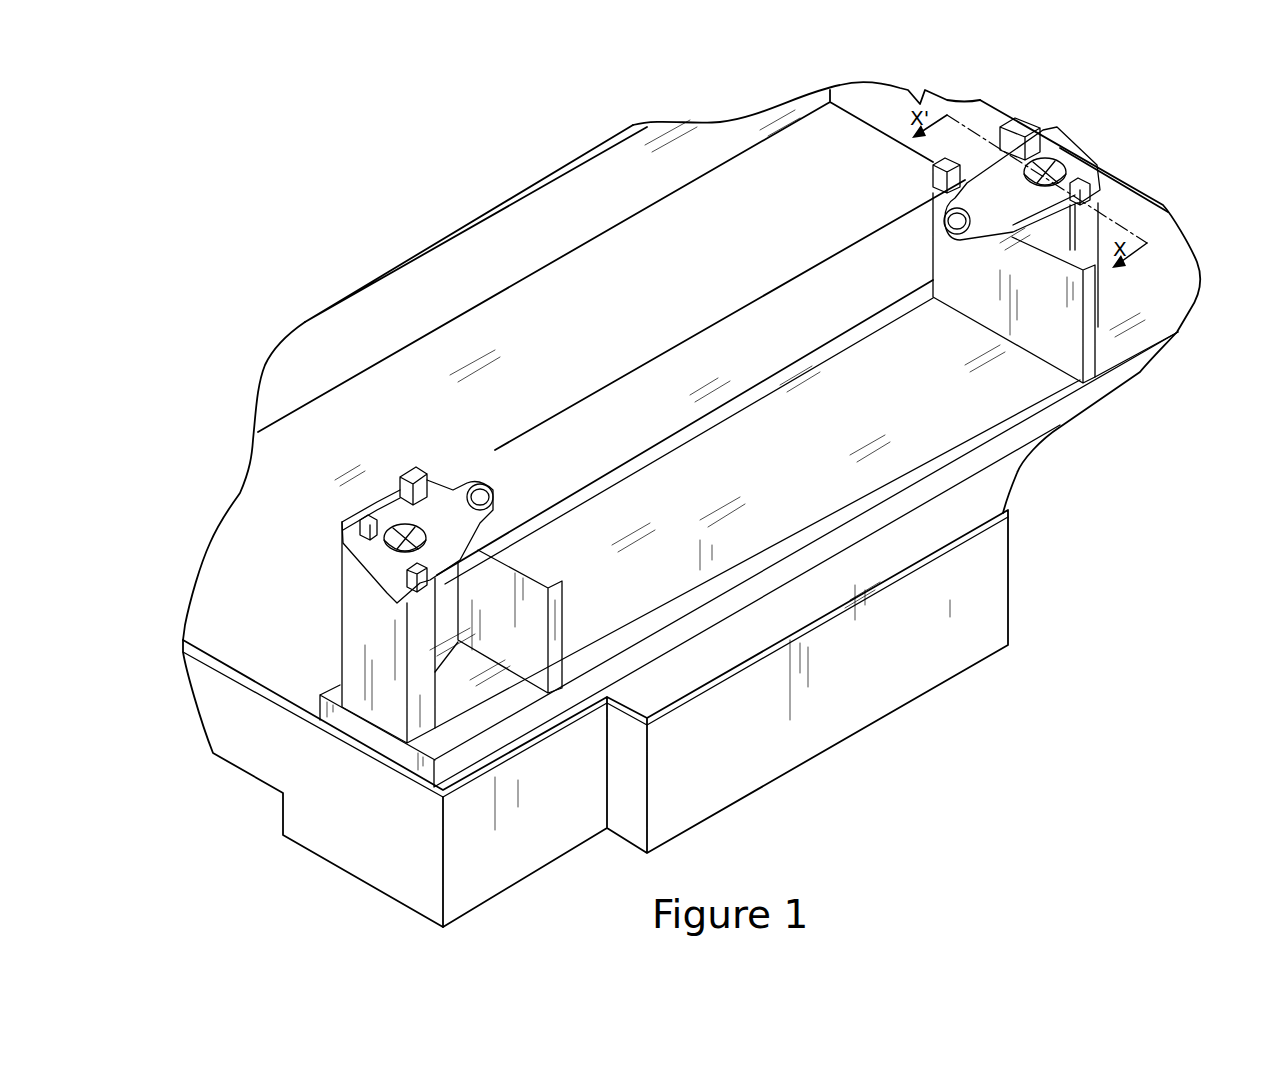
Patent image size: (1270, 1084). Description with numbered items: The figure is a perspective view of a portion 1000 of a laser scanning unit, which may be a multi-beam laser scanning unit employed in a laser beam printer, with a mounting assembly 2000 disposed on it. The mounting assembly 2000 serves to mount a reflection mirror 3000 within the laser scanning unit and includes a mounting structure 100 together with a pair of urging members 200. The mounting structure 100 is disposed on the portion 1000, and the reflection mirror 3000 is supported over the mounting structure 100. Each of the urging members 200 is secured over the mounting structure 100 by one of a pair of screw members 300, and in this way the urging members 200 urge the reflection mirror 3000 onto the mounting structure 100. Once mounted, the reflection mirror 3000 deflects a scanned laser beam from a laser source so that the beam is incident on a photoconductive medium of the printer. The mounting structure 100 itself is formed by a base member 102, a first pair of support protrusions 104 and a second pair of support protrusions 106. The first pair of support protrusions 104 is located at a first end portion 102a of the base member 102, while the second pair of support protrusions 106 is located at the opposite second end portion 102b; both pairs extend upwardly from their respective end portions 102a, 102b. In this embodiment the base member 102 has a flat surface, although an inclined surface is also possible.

The portion of a laser scanning unit 1000 is at (803, 96).
The mounting assembly 2000 is at (647, 349).
The reflection mirror 3000 is at (690, 360).
The mounting structure 100 is at (990, 467).
The base member 102 is at (797, 563).
The first end portion 102a is at (1107, 385).
The second end portion 102b is at (510, 727).
The first pair of support protrusions 104 is at (1100, 300).
The second pair of support protrusions 106 is at (340, 603).
The urging members 200 is at (405, 517).
The screw members 300 is at (709, 324).